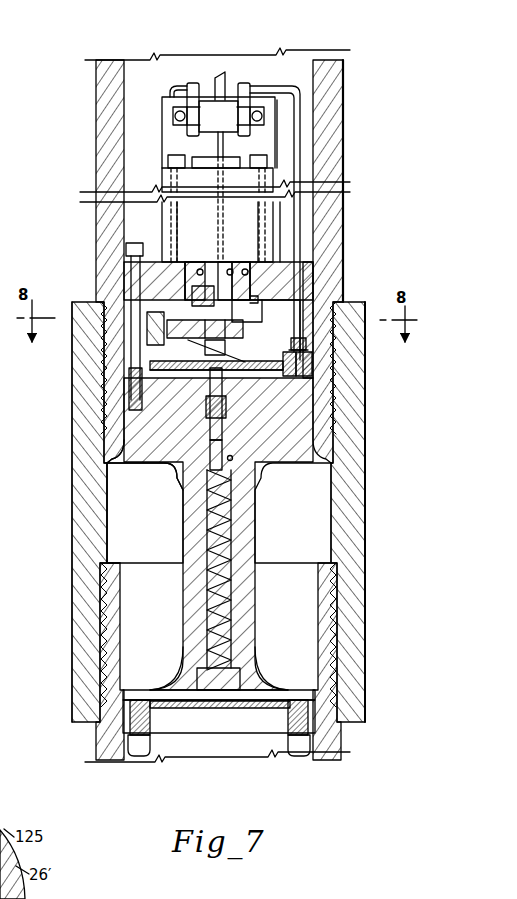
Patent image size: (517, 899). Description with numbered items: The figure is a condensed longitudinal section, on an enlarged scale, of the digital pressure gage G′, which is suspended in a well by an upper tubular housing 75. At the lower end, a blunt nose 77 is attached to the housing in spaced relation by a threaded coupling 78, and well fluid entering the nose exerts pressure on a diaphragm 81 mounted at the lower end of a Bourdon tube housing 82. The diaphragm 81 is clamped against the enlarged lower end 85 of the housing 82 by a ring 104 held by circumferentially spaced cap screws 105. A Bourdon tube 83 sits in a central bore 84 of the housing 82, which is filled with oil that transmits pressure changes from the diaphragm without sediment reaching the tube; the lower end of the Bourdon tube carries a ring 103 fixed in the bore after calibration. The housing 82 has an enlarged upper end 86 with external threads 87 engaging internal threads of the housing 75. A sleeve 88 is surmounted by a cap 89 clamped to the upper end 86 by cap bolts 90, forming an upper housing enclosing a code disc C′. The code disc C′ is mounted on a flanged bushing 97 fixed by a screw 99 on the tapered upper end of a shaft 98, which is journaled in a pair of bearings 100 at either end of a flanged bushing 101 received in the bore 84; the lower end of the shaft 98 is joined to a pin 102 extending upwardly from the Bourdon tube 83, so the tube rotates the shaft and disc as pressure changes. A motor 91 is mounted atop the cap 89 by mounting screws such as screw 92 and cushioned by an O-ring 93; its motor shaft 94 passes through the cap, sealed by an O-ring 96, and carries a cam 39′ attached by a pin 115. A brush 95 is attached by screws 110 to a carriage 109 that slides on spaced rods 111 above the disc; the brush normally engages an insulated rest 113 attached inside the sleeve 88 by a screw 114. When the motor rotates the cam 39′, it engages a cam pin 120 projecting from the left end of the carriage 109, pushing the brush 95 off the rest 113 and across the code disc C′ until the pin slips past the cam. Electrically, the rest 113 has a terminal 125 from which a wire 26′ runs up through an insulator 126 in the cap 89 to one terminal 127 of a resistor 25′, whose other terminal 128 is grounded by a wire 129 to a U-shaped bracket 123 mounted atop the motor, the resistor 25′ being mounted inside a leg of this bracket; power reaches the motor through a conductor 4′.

The terminal 128 is at (192, 83).
The conductor 4′ is at (219, 72).
The terminal 127 is at (245, 83).
The wire 129 is at (170, 91).
The U-shaped bracket 123 is at (170, 132).
The resistor 25′ is at (231, 126).
The upper tubular housing 75 is at (328, 150).
The motor 91 is at (218, 189).
The wire 26′ is at (300, 182).
The cap bolts 90 is at (130, 250).
The cap 89 is at (125, 275).
The cam 39′ is at (172, 299).
The cam pin 120 is at (148, 316).
The O-ring 93 is at (199, 268).
The pin 115 is at (203, 287).
The O-ring 96 is at (223, 266).
The motor shaft 94 is at (223, 273).
The insulator 126 is at (305, 240).
The sleeve 88 is at (320, 300).
The rods 111 is at (313, 315).
The screw 92 is at (252, 297).
The carriage 109 is at (244, 323).
The terminal 125 is at (308, 350).
The brush 95 is at (226, 364).
The code disc C′ is at (266, 362).
The screw 99 is at (215, 367).
The screws 110 is at (160, 362).
The flanged bushing 101 is at (205, 396).
The flanged bushing 97 is at (226, 382).
The bearings 100 is at (227, 410).
The screw 114 is at (312, 370).
The insulated rest 113 is at (300, 380).
The digital pressure gage G′ is at (62, 468).
The shaft 98 is at (122, 452).
The external threads 87 is at (117, 460).
The pin 102 is at (177, 478).
The central bore 84 is at (233, 459).
The enlarged upper end 86 is at (296, 458).
The threaded coupling 78 is at (70, 528).
The Bourdon tube housing 82 is at (186, 535).
The Bourdon tube 83 is at (233, 536).
The ring 103 is at (257, 665).
The enlarged lower end 85 is at (268, 690).
The ring 104 is at (163, 722).
The diaphragm 81 is at (233, 722).
The cap screws 105 is at (140, 756).
The blunt nose 77 is at (340, 752).